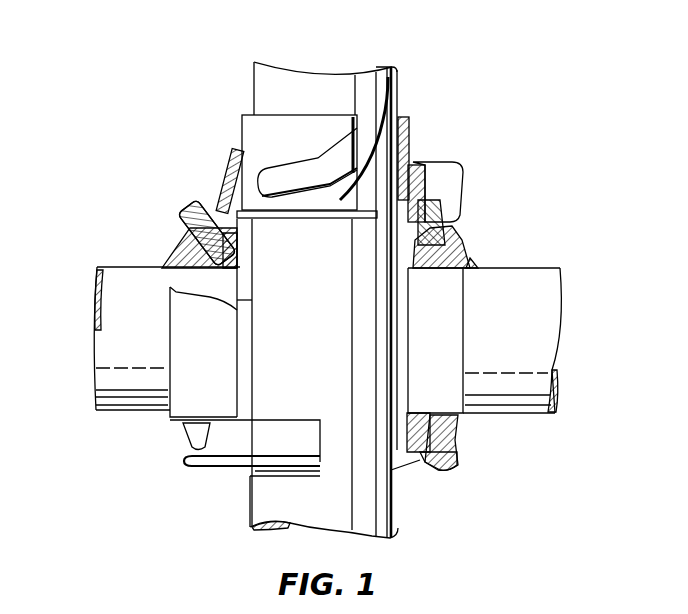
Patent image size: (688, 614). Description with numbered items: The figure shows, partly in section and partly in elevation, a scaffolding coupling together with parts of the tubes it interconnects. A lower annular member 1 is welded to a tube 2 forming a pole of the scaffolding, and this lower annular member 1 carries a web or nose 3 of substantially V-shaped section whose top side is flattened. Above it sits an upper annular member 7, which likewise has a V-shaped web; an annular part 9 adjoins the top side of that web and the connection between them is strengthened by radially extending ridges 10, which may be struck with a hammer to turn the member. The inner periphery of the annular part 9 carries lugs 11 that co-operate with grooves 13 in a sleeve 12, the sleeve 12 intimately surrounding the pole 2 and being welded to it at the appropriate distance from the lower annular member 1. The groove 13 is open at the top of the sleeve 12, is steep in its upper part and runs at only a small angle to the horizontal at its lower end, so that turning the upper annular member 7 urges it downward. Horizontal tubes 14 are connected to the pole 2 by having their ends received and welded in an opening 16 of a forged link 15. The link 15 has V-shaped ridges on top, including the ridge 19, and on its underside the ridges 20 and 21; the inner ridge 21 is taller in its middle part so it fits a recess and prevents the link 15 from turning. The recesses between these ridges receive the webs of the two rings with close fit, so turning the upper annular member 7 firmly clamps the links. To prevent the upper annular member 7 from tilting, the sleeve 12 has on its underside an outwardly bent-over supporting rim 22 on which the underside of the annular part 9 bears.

The lower annular member 1 is at (200, 472).
The tube 2 is at (267, 502).
The web 3 is at (430, 447).
The upper annular member 7 is at (232, 157).
The annular part 9 is at (227, 190).
The radially extending ridges 10 is at (212, 192).
The lugs 11 is at (402, 180).
The sleeve 12 is at (290, 128).
The grooves 13 is at (358, 143).
The horizontal tubes 14 is at (118, 313).
The link 15 is at (477, 258).
The opening 16 is at (447, 323).
The ridge 19 is at (445, 258).
The ridge 20 is at (190, 250).
The inner ridge 21 is at (233, 270).
The supporting rim 22 is at (290, 213).